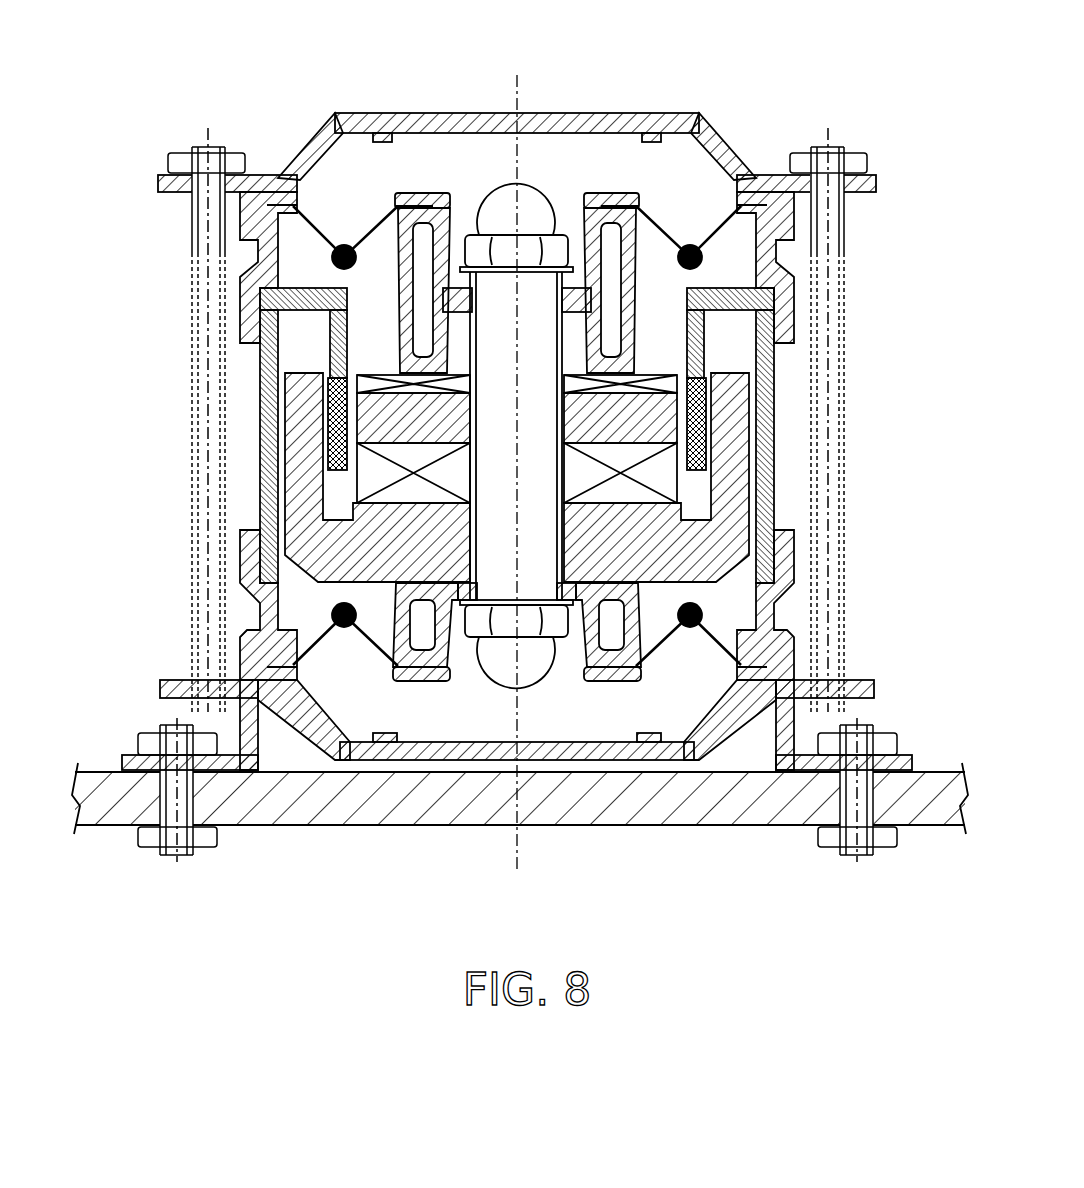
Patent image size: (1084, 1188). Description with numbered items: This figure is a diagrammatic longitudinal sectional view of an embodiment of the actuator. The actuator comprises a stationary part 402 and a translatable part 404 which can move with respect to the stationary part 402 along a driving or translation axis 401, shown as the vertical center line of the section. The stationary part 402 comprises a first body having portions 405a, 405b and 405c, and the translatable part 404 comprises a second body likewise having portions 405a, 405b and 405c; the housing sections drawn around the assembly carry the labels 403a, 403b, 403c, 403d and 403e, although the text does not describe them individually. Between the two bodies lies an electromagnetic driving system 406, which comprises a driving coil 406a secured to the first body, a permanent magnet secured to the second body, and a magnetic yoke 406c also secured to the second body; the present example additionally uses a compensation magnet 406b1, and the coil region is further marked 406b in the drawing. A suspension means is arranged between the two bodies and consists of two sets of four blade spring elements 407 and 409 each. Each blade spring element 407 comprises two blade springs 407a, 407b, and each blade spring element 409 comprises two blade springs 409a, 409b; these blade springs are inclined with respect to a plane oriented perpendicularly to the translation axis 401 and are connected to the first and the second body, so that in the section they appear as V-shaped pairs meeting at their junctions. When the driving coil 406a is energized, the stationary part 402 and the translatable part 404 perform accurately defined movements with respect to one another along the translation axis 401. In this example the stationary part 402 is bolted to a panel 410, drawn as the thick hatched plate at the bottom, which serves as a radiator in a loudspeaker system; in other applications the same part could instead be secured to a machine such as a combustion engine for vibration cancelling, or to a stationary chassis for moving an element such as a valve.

The translation axis 401 is at (516, 78).
The stationary part 402 is at (783, 499).
The housing side wall 403a is at (785, 328).
The housing bracket top 403b is at (730, 300).
The housing inner wall 403c is at (768, 445).
The housing sloped portion 403d is at (722, 142).
The housing end plate 403e is at (601, 113).
The translatable part 404 is at (502, 688).
The body portion 405a is at (437, 193).
The body portion 405b is at (398, 340).
The body portion 405c is at (528, 300).
The electromagnetic driving system 406 is at (710, 373).
The driving coil 406a is at (700, 412).
The stator coil 406b is at (370, 490).
The compensation magnet 406b1 is at (665, 378).
The magnetic yoke 406c is at (370, 417).
The blade spring element 407 is at (728, 226).
The blade spring 407a is at (368, 228).
The blade spring 407b is at (313, 222).
The blade spring element 409 is at (714, 660).
The blade spring 409a is at (376, 650).
The blade spring 409b is at (318, 640).
The panel 410 is at (371, 815).